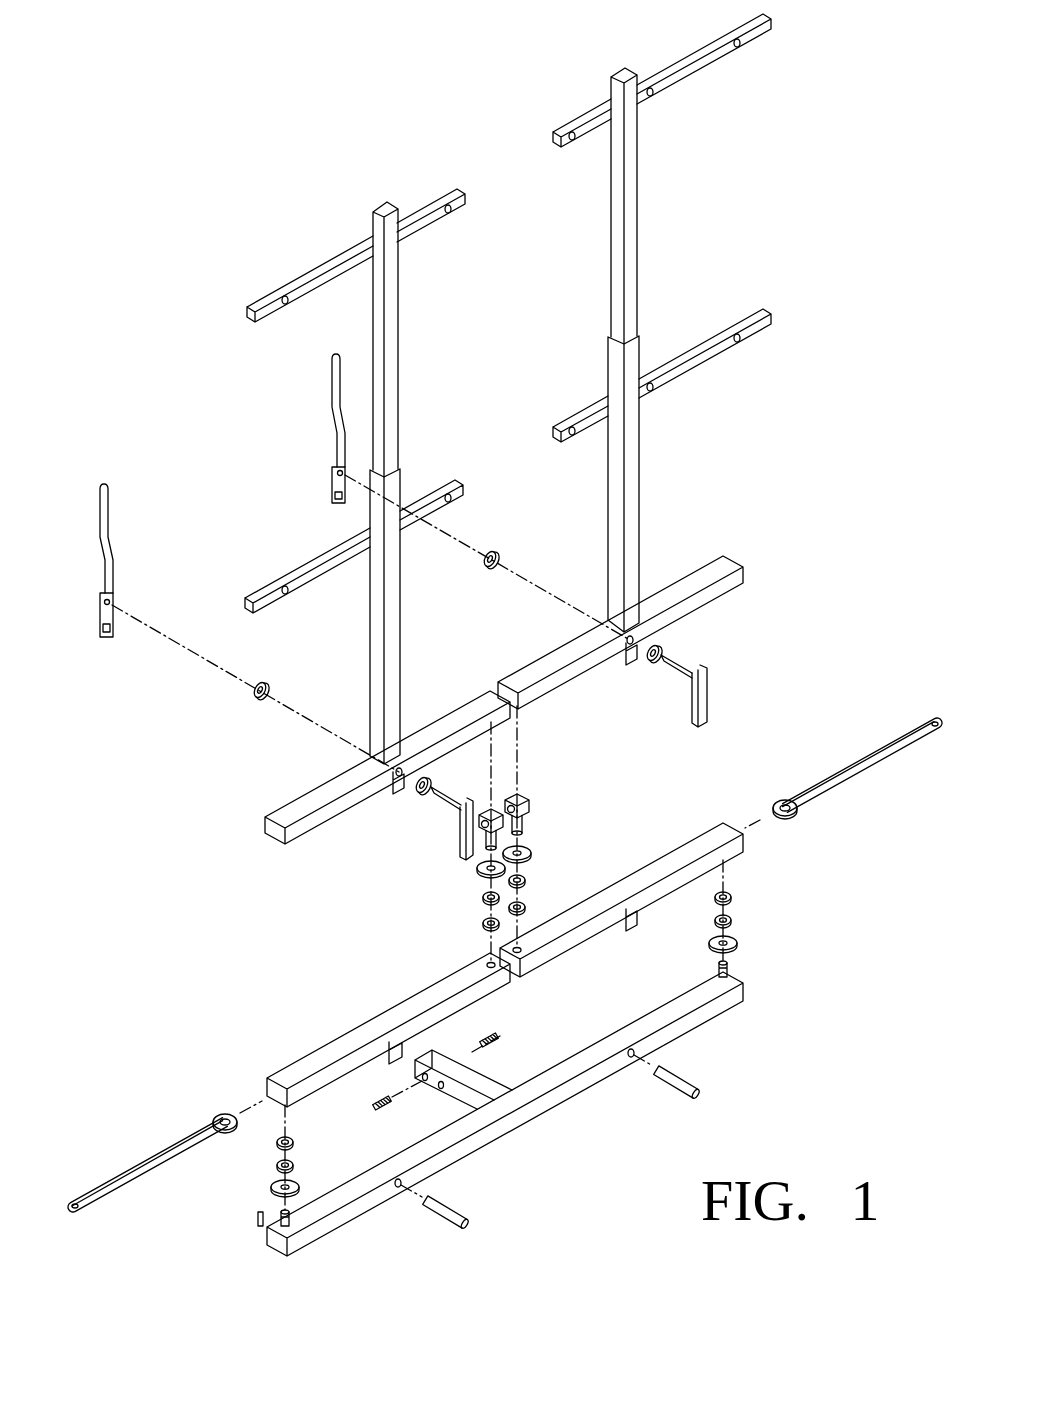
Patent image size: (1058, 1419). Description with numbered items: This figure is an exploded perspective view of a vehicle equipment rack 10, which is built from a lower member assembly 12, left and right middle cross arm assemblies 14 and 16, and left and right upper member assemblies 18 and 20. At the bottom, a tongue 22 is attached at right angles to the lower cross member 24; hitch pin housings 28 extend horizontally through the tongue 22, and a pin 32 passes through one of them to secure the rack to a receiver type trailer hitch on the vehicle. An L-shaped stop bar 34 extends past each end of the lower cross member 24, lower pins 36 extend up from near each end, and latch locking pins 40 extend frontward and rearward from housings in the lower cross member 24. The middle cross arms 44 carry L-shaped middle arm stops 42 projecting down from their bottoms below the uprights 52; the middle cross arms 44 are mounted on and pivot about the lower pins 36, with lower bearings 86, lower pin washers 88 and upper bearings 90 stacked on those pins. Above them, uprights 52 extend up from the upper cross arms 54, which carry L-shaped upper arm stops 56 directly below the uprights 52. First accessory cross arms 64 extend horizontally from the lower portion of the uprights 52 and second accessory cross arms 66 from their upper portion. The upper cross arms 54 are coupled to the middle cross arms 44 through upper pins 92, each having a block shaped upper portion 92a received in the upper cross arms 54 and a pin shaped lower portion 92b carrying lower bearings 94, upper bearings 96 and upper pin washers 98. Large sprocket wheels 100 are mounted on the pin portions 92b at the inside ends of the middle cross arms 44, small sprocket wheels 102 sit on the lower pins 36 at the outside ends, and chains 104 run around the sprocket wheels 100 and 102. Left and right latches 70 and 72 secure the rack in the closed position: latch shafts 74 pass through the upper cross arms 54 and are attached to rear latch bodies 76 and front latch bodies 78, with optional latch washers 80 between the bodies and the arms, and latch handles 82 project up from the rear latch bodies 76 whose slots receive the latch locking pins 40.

The equipment rack 10 is at (176, 339).
The lower member assembly 12 is at (568, 1135).
The left middle cross arm assembly 14 is at (292, 1055).
The right middle cross arm assembly 16 is at (698, 805).
The left upper member assembly 18 is at (250, 733).
The right upper member assembly 20 is at (697, 517).
The tongue 22 is at (470, 1080).
The lower cross member 24 is at (640, 1025).
The hitch pin housings 28 is at (441, 1091).
The pin 32 is at (500, 1040).
The stop bar 34 is at (255, 1220).
The lower pins 36 is at (295, 1225).
The latch locking pins 40 is at (450, 1200).
The middle arm stops 42 is at (405, 1050).
The middle cross arms 44 is at (358, 1028).
The uprights 52 is at (394, 617).
The upper cross arms 54 is at (292, 805).
The upper arm stops 56 is at (398, 797).
The first accessory cross arms 64 is at (290, 578).
The second accessory cross arms 66 is at (432, 218).
The left latch 70 is at (452, 872).
The right latch 72 is at (712, 657).
The latch shafts 74 is at (675, 675).
The rear latch bodies 76 is at (100, 608).
The front latch bodies 78 is at (708, 700).
The latch washers 80 is at (265, 684).
The latch handles 82 is at (108, 512).
The lower bearings 86 is at (270, 1165).
The lower pin washers 88 is at (268, 1187).
The upper bearings 90 is at (270, 1142).
The upper pins 92 is at (500, 785).
The block shaped upper portion 92a is at (530, 805).
The pin shaped lower portion 92b is at (530, 830).
The lower bearings 94 is at (490, 925).
The upper bearings 96 is at (535, 883).
The upper pin washers 98 is at (535, 855).
The large sprocket wheels 100 is at (222, 1110).
The small sprocket wheels 102 is at (76, 1200).
The chains 104 is at (146, 1195).